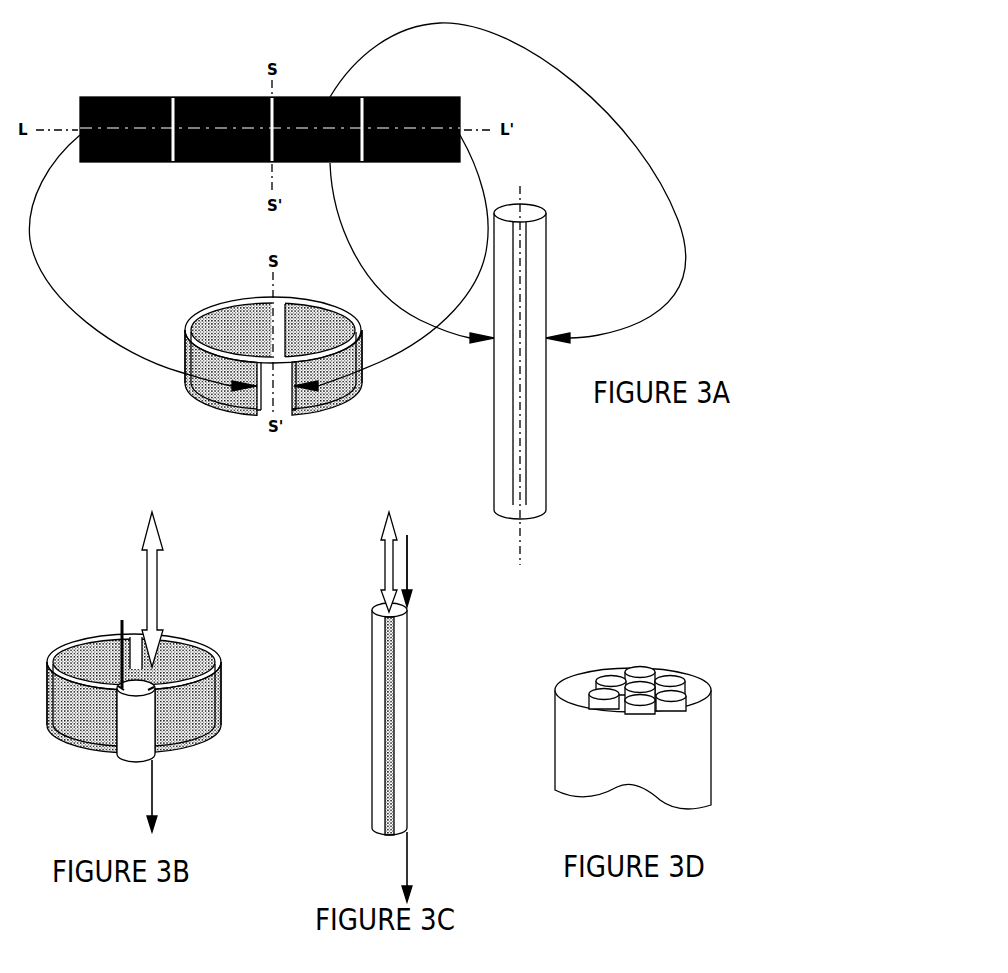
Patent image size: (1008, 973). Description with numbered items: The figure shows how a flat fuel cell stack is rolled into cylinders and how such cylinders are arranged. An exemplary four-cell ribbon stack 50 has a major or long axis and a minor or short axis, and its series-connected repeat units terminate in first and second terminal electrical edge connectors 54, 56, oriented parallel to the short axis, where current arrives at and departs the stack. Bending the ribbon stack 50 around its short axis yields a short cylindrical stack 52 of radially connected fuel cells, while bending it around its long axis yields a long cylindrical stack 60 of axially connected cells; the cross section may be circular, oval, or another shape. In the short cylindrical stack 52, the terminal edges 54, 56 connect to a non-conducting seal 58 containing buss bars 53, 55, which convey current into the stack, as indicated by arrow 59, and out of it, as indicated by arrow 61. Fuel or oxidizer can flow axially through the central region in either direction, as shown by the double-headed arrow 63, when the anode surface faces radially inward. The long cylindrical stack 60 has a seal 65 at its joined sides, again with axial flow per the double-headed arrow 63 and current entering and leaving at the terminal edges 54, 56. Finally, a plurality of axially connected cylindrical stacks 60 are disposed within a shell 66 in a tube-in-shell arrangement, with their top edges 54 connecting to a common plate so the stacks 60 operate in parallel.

In FIG. 3A, the ribbon stack 50 is at (211, 62).
In FIG. 3A, the short cylindrical stack 52 is at (194, 279).
In FIG. 3B, the short cylindrical stack 52 is at (222, 698).
In FIG. 3B, the buss bar 53 is at (120, 688).
In FIG. 3A, the first terminal electrical edge connector 54 is at (80, 107).
In FIG. 3B, the first terminal electrical edge connector 54 is at (112, 745).
In FIG. 3C, the first terminal electrical edge connector 54 is at (409, 616).
In FIG. 3D, the first terminal electrical edge connector 54 is at (696, 688).
In FIG. 3B, the buss bar 55 is at (150, 690).
In FIG. 3A, the second terminal electrical edge connector 56 is at (462, 105).
In FIG. 3B, the second terminal electrical edge connector 56 is at (160, 752).
In FIG. 3C, the second terminal electrical edge connector 56 is at (402, 830).
In FIG. 3B, the non-conducting seal 58 is at (145, 725).
In FIG. 3B, the arrow 59 is at (121, 622).
In FIG. 3A, the long cylindrical stack 60 is at (544, 187).
In FIG. 3C, the long cylindrical stack 60 is at (350, 598).
In FIG. 3D, the long cylindrical stack 60 is at (652, 696).
In FIG. 3B, the arrow 61 is at (153, 790).
In FIG. 3C, the arrow 61 is at (405, 878).
In FIG. 3B, the double-headed arrow 63 is at (160, 572).
In FIG. 3C, the double-headed arrow 63 is at (387, 562).
In FIG. 3C, the seal 65 is at (398, 735).
In FIG. 3D, the shell 66 is at (690, 745).